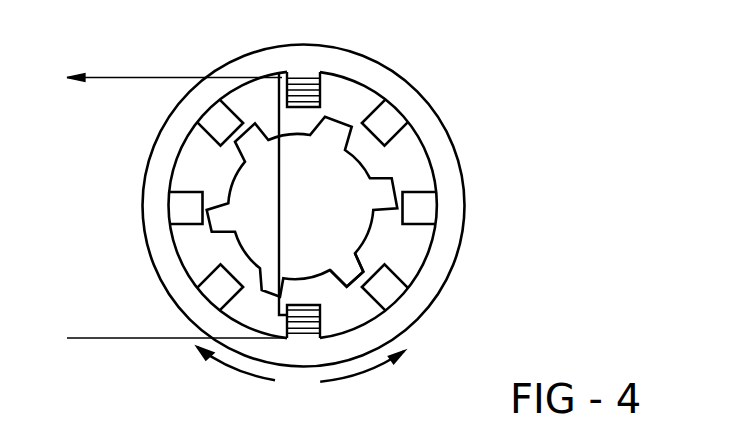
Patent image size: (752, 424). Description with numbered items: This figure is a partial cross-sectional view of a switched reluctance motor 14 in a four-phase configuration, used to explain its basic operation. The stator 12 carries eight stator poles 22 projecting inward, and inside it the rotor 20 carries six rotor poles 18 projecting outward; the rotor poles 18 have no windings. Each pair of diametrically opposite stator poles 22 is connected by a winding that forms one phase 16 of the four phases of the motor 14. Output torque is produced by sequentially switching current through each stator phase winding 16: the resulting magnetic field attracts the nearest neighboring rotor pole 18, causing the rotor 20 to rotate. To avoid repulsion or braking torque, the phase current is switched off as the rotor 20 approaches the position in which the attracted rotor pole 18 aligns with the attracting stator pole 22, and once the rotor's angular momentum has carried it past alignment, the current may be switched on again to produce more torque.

The stator 12 is at (375, 78).
The motor 14 is at (217, 55).
The phase winding 16 is at (118, 77).
The rotor pole 18 is at (354, 270).
The rotor 20 is at (243, 180).
The stator pole 22 is at (385, 127).